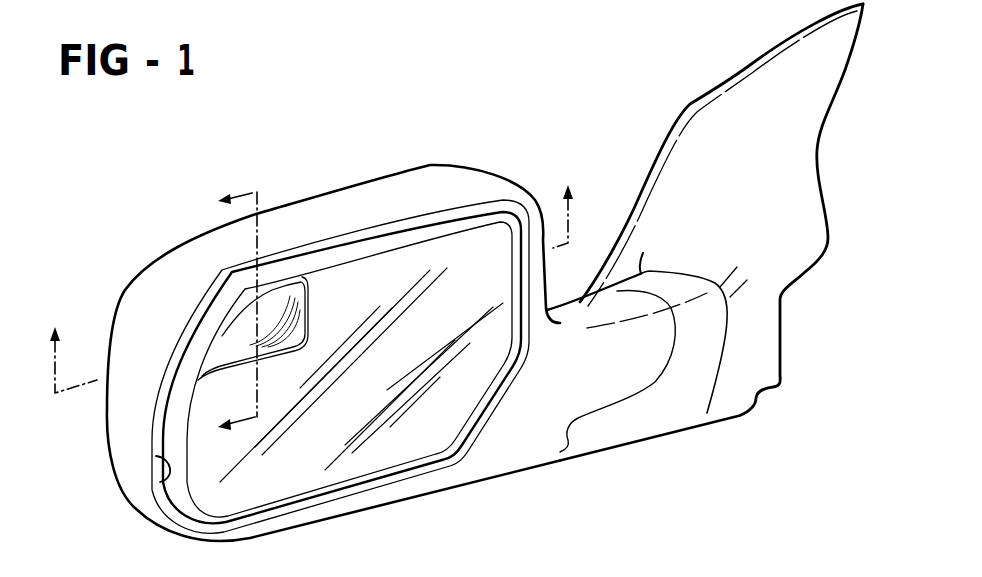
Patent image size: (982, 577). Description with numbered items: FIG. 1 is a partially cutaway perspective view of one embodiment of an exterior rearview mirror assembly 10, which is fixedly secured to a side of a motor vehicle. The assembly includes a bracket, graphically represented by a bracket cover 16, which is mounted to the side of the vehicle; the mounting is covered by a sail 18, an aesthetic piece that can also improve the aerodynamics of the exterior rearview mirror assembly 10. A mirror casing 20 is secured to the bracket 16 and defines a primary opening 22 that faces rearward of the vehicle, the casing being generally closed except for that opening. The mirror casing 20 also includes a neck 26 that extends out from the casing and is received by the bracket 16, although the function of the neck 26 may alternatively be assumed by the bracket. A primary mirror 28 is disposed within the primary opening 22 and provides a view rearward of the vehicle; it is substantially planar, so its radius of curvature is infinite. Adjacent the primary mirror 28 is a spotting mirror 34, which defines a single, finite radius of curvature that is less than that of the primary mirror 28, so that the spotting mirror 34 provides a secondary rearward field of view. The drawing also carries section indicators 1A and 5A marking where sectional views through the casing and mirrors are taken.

The exterior rearview mirror assembly 10 is at (332, 170).
The bracket cover 16 is at (653, 432).
The sail 18 is at (661, 132).
The mirror casing 20 is at (160, 254).
The primary opening 22 is at (168, 481).
The neck 26 is at (590, 297).
The primary mirror 28 is at (327, 494).
The spotting mirror 34 is at (310, 313).
The section line 1A is at (311, 270).
The section line 5A is at (213, 315).